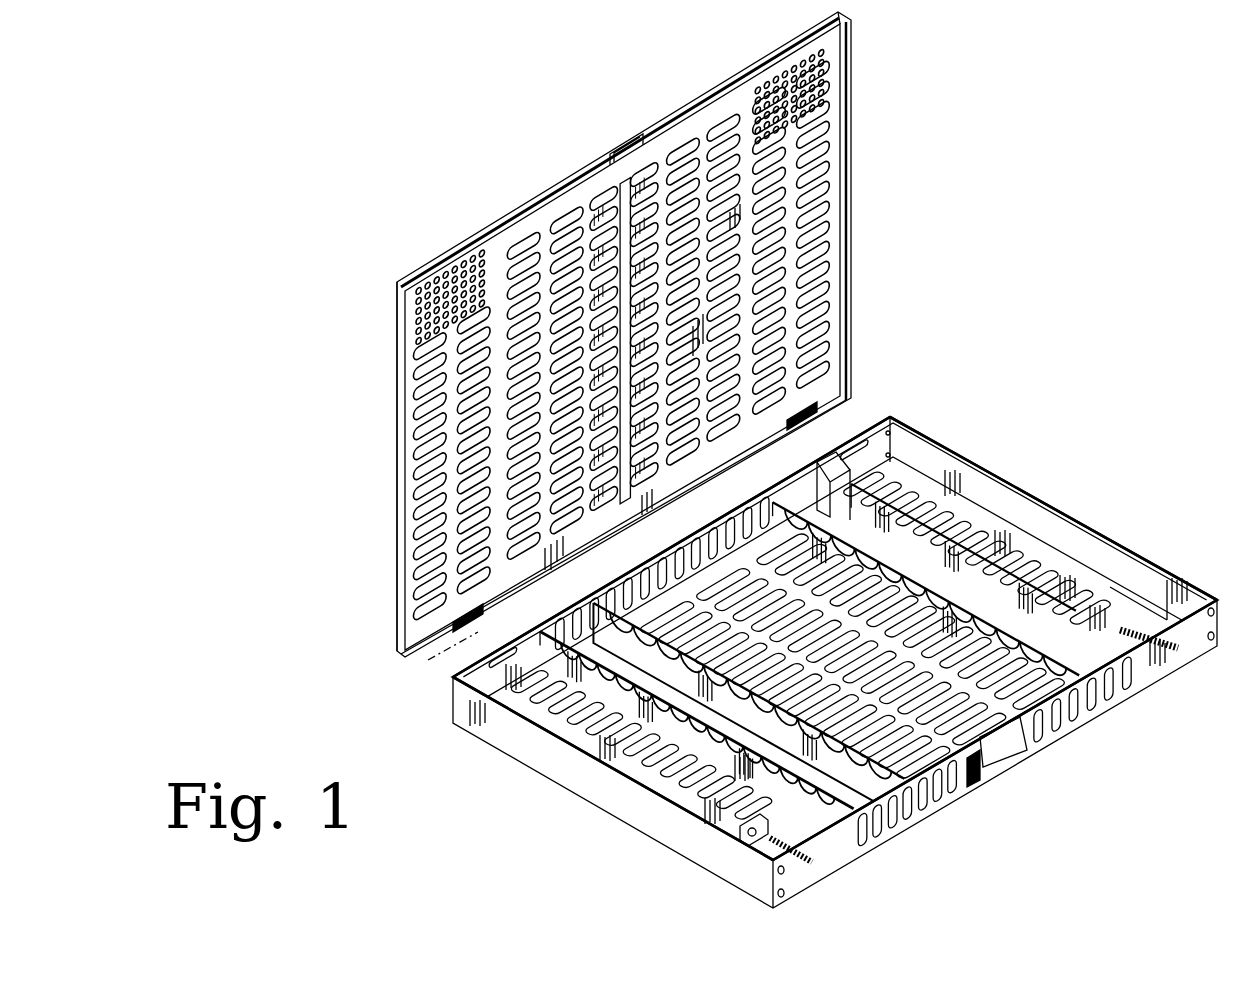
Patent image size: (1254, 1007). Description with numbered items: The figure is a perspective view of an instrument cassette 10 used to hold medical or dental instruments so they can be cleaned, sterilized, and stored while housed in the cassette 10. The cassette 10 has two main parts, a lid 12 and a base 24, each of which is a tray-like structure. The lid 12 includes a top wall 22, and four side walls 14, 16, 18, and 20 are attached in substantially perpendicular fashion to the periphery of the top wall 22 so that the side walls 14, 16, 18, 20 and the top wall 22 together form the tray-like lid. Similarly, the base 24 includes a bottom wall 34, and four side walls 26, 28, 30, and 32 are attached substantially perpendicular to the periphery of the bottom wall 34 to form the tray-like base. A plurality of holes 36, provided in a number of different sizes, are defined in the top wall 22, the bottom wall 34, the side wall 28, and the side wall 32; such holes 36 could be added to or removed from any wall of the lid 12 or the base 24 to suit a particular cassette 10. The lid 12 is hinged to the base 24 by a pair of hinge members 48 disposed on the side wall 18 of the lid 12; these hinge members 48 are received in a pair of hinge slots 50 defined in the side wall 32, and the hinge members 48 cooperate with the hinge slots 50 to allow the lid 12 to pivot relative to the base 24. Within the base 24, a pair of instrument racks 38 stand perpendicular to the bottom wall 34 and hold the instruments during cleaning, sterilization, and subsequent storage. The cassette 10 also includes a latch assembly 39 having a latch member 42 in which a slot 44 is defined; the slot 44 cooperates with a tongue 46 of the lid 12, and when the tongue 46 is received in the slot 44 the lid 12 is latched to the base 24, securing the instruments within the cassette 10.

The instrument cassette 10 is at (1104, 241).
The lid 12 is at (354, 428).
The side wall 14 is at (708, 100).
The side wall 16 is at (855, 186).
The side wall 18 is at (400, 640).
The side wall 20 is at (400, 518).
The top wall 22 is at (515, 237).
The base 24 is at (598, 815).
The side wall 26 is at (1062, 522).
The side wall 28 is at (1200, 651).
The side wall 30 is at (695, 832).
The side wall 32 is at (466, 688).
The bottom wall 34 is at (968, 520).
The holes 36 is at (413, 366).
The instrument racks 38 is at (893, 833).
The latch assembly 39 is at (1025, 768).
The latch member 42 is at (987, 790).
The slot 44 is at (1003, 770).
The tongue 46 is at (620, 157).
The hinge members 48 is at (850, 410).
The hinge slots 50 is at (868, 448).